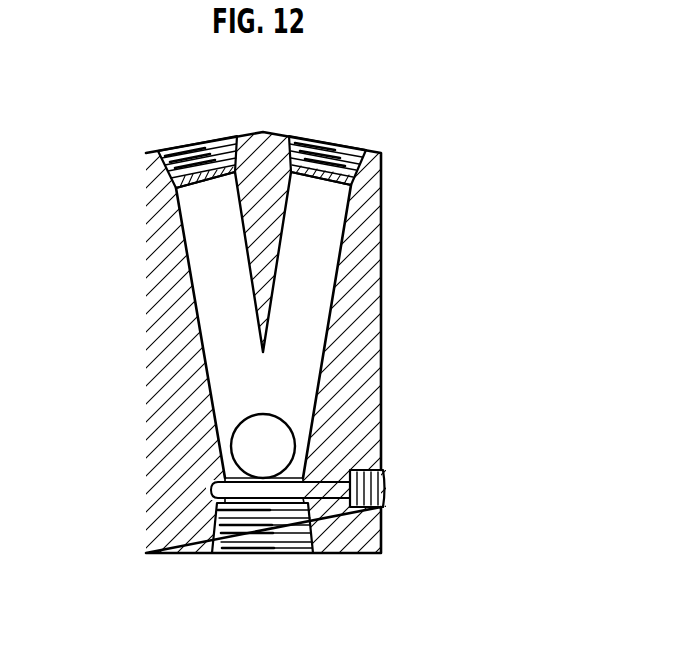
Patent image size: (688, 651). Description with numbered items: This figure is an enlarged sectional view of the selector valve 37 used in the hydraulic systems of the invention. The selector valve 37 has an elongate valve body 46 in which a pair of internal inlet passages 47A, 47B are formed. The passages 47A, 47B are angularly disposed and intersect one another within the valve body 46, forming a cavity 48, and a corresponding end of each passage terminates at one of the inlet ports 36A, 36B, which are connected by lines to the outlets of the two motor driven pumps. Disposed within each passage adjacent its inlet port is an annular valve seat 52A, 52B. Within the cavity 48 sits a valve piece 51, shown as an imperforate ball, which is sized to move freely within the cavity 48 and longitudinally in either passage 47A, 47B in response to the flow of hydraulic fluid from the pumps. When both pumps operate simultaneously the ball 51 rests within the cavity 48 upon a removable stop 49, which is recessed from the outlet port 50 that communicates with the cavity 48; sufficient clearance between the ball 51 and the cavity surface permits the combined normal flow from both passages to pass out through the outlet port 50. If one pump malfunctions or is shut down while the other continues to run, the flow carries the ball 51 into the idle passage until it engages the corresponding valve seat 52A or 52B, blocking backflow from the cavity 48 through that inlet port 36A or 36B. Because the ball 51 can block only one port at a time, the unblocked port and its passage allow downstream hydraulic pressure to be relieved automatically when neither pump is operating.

The selector valve 37 is at (344, 324).
The valve body 46 is at (370, 267).
The internal inlet passage 47A is at (337, 233).
The internal inlet passage 47B is at (187, 258).
The cavity 48 is at (302, 355).
The inlet port 36A is at (300, 140).
The inlet port 36B is at (176, 146).
The annular valve seat 52A is at (322, 178).
The annular valve seat 52B is at (174, 182).
The valve piece 51 is at (243, 442).
The removable stop 49 is at (333, 492).
The outlet port 50 is at (268, 545).